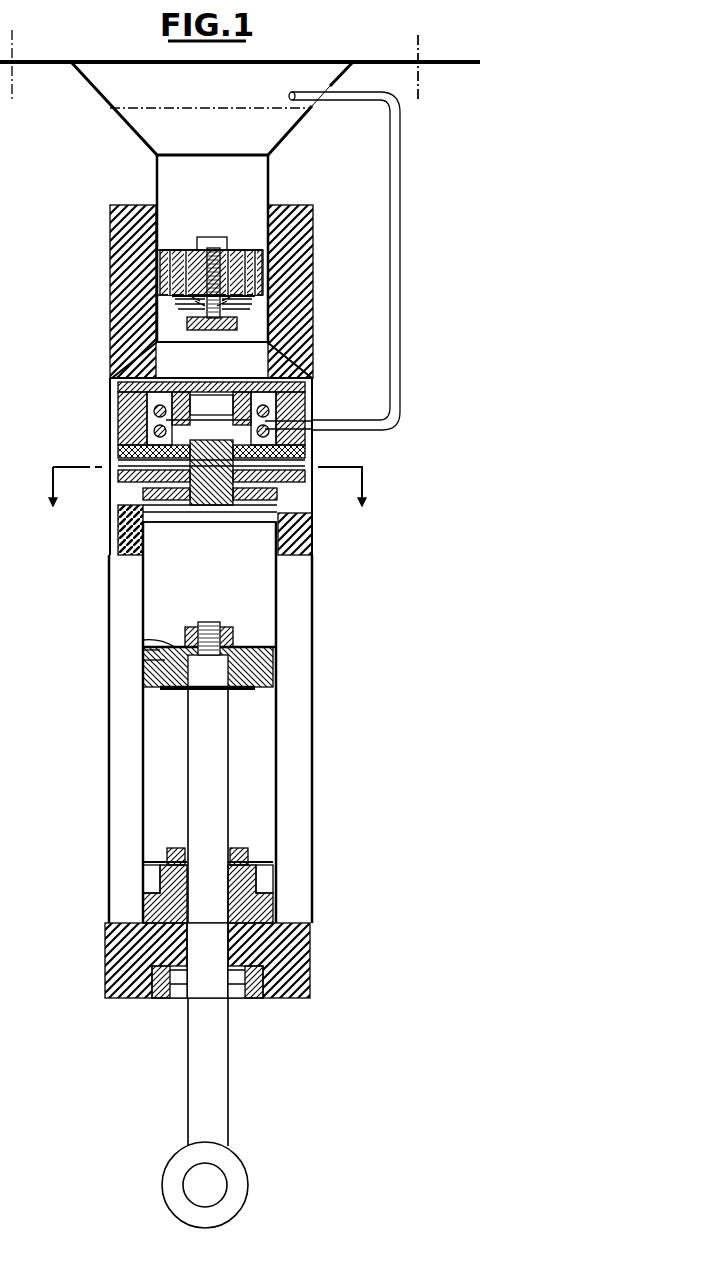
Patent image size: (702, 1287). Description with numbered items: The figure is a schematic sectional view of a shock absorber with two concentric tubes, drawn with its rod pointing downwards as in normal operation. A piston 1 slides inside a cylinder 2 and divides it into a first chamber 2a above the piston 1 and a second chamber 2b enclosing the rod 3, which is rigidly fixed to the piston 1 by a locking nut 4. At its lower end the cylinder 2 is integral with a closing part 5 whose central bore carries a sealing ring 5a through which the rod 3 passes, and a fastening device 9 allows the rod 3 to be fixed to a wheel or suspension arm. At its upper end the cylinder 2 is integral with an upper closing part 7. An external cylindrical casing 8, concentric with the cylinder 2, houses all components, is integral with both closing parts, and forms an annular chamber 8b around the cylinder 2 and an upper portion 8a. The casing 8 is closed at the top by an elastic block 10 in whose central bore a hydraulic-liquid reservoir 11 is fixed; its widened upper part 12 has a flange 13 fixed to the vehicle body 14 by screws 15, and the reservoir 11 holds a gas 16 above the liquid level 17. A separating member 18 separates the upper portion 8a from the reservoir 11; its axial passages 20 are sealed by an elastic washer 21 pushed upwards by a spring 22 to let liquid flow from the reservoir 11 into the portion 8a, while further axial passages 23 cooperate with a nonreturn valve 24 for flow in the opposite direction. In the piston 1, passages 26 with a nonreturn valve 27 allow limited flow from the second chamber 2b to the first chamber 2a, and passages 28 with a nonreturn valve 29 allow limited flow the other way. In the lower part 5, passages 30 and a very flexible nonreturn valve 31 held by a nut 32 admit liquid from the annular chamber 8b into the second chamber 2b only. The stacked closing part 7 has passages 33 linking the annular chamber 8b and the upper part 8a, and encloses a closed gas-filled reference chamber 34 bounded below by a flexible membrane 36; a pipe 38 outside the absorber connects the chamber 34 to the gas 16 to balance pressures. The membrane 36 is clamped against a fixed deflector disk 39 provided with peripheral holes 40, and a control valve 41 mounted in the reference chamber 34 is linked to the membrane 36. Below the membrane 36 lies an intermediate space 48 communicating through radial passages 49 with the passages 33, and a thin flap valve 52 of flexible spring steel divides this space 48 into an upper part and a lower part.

The piston 1 is at (276, 665).
The cylinder 2 is at (278, 740).
The first chamber 2a is at (250, 588).
The second chamber 2b is at (257, 782).
The rod 3 is at (240, 805).
The locking nut 4 is at (240, 635).
The closing part 5 is at (290, 965).
The sealing ring 5a is at (258, 985).
The upper closing part 7 is at (297, 537).
The external cylindrical casing 8 is at (313, 832).
The upper portion of the casing 8a is at (148, 363).
The annular chamber 8b is at (290, 853).
The fastening device 9 is at (228, 1162).
The elastic block 10 is at (118, 262).
The hydraulic-liquid reservoir 11 is at (155, 180).
The upper part of the reservoir 12 is at (106, 104).
The flange 13 is at (52, 65).
The body 14 is at (307, 62).
The screws 15 is at (418, 50).
The gas 16 is at (322, 80).
The liquid level 17 is at (252, 108).
The separating member 18 is at (150, 276).
The axial passages 20 is at (112, 300).
The elastic washer 21 is at (258, 308).
The spring 22 is at (250, 323).
The axial passages 23 is at (268, 283).
The nonreturn valve 24 is at (235, 246).
The passages 26 is at (150, 672).
The nonreturn valve 27 is at (145, 632).
The passages 28 is at (143, 652).
The nonreturn valve 29 is at (165, 703).
The passages 30 is at (150, 893).
The nonreturn valve 31 is at (160, 845).
The nut 32 is at (150, 832).
The passages 33 is at (118, 395).
The reference chamber 34 is at (150, 422).
The flexible membrane 36 is at (118, 450).
The pipe 38 is at (400, 252).
The deflector disk 39 is at (300, 456).
The holes 40 is at (300, 478).
The control valve 41 is at (212, 485).
The intermediate space 48 is at (243, 492).
The radial passages 49 is at (120, 468).
The flap valve 52 is at (180, 485).